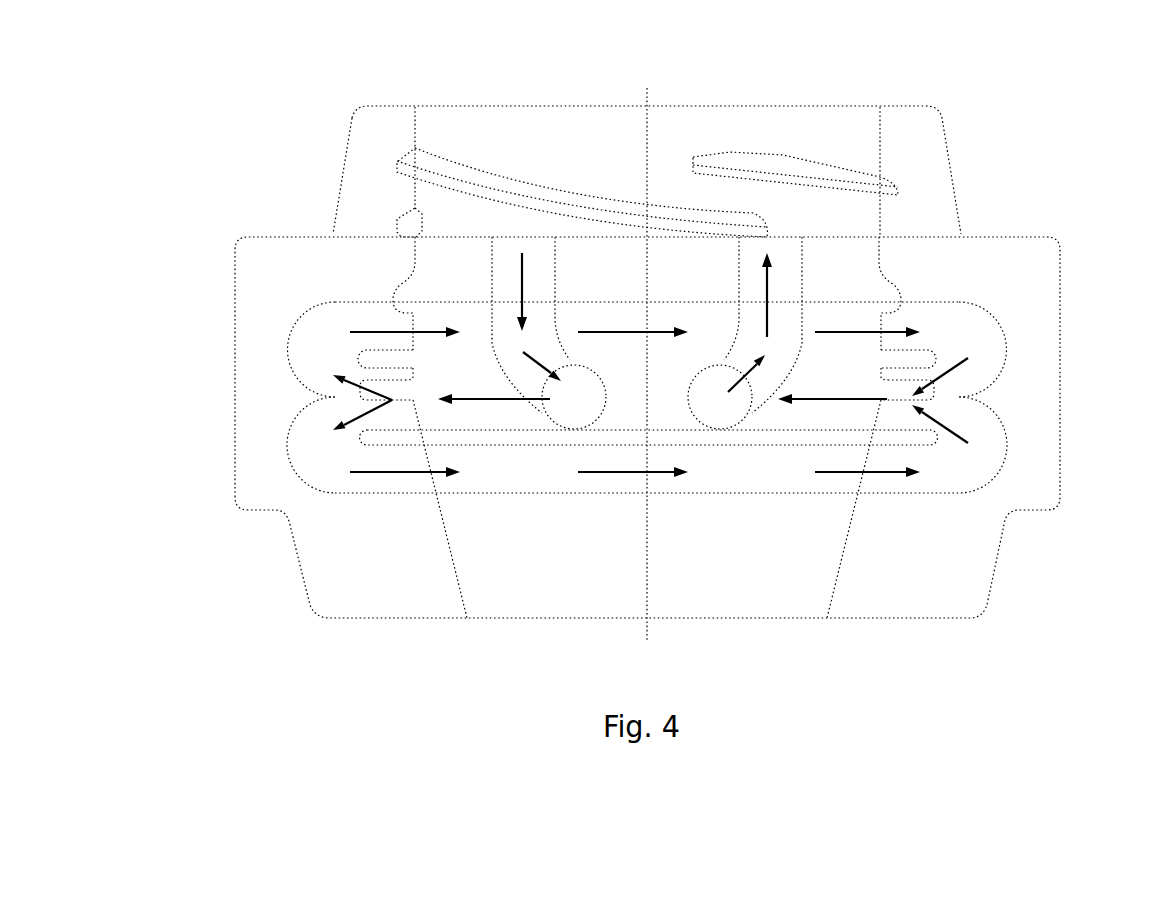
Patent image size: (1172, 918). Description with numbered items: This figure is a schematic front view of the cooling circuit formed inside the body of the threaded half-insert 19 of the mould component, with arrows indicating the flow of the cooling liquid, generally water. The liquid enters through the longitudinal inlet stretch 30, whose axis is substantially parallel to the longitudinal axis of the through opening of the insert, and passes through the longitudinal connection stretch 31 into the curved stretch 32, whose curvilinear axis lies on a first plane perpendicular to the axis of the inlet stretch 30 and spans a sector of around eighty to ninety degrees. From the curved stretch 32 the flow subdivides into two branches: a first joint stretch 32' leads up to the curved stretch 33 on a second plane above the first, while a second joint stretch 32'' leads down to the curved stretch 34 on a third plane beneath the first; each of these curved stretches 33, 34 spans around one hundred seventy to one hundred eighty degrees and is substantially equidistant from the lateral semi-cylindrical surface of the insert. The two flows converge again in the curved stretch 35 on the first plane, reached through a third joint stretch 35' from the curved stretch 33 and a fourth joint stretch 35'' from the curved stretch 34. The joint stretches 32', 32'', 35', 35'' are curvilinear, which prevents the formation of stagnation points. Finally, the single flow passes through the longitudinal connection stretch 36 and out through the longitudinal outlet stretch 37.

The threaded half-insert 19 is at (975, 124).
The longitudinal inlet stretch 30 is at (508, 253).
The longitudinal connection stretch 31 is at (532, 358).
The curved stretch 32 is at (537, 427).
The first joint stretch 32' is at (238, 349).
The second joint stretch 32'' is at (277, 421).
The curved stretch 33 is at (617, 327).
The curved stretch 34 is at (557, 470).
The curved stretch 35 is at (957, 427).
The third joint stretch 35' is at (1051, 349).
The fourth joint stretch 35'' is at (1015, 421).
The longitudinal connection stretch 36 is at (728, 393).
The longitudinal outlet stretch 37 is at (777, 256).